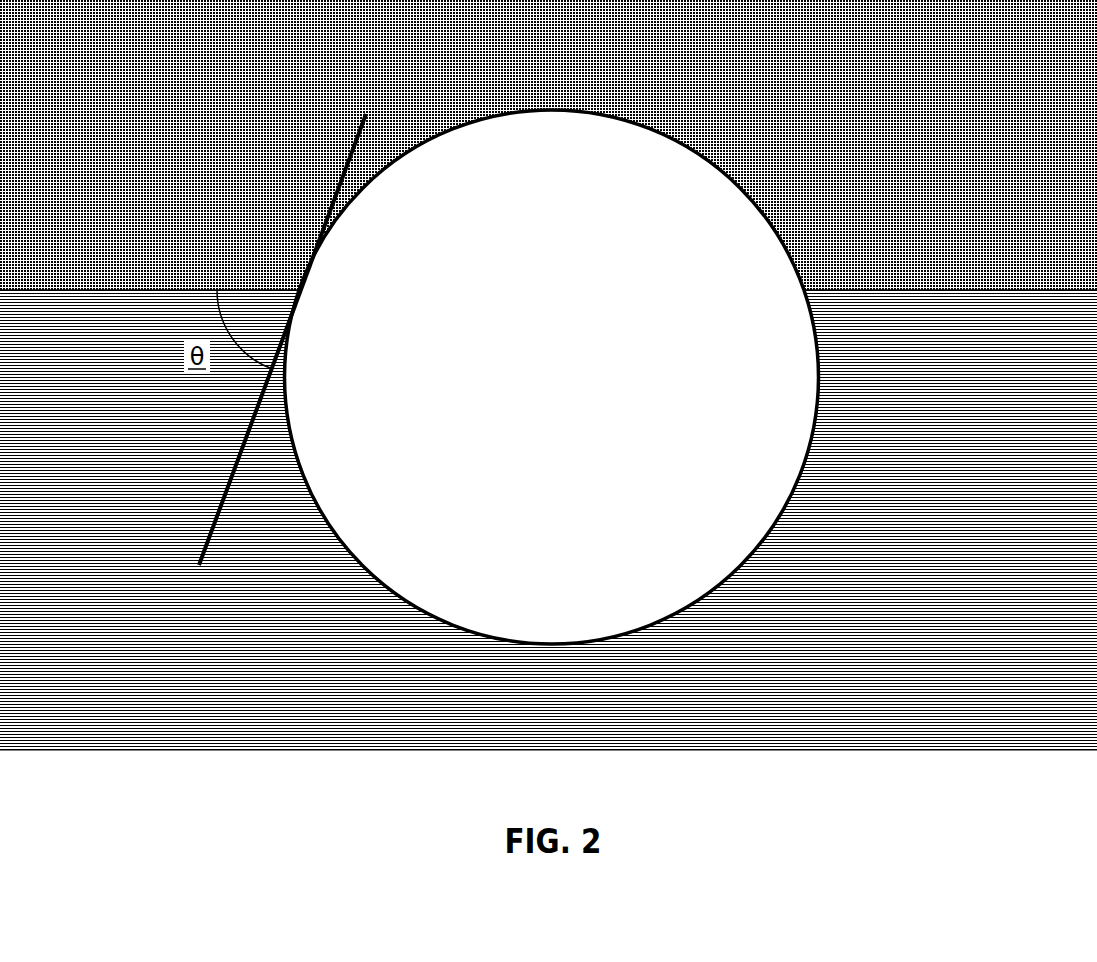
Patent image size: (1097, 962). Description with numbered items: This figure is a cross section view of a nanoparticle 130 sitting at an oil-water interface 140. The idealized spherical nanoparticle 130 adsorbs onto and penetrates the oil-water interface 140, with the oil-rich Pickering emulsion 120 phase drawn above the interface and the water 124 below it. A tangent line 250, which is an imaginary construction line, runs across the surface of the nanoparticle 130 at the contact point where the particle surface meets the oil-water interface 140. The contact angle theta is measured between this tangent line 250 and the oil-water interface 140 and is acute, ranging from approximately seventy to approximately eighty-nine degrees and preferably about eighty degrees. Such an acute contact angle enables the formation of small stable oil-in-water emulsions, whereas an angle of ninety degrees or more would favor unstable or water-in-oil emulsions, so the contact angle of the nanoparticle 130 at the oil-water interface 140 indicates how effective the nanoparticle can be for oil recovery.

The Pickering emulsion 120 is at (962, 121).
The water 124 is at (953, 529).
The nanoparticle 130 is at (525, 391).
The oil-water interface 140 is at (77, 280).
The tangent line 250 is at (340, 146).